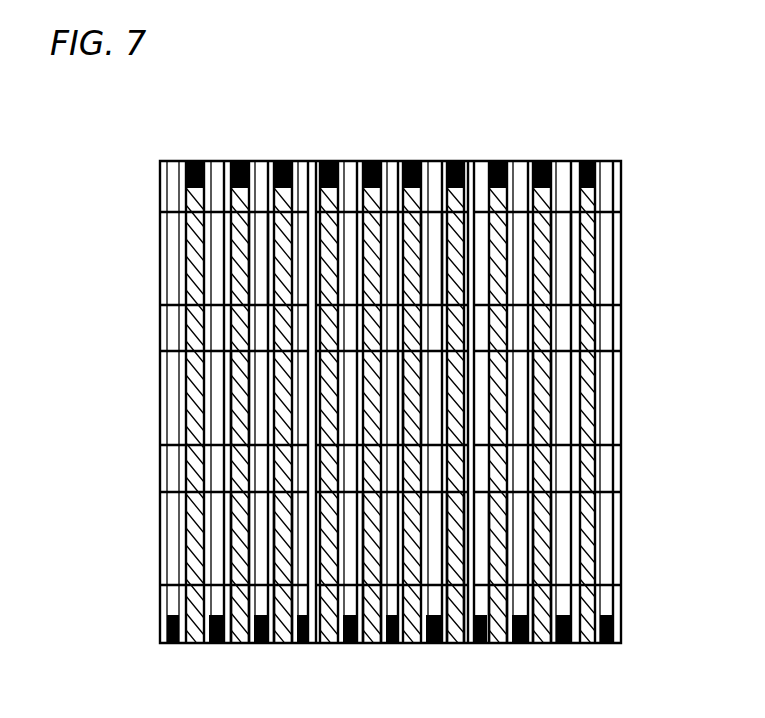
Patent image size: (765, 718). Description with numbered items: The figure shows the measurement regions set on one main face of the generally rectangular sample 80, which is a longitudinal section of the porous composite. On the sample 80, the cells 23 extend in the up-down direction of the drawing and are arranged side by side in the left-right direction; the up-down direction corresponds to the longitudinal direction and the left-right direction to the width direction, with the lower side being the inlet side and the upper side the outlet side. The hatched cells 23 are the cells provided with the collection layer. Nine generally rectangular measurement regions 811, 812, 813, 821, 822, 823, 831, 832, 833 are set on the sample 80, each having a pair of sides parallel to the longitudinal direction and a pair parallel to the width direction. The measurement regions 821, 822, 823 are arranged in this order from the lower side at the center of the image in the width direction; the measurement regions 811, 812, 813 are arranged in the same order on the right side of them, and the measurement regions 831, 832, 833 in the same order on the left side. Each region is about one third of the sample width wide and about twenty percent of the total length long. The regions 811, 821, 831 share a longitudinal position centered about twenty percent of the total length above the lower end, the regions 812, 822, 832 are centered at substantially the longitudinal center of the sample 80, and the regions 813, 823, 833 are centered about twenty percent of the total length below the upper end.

The sample 80 is at (172, 125).
The measurement region 811 is at (493, 559).
The measurement region 812 is at (548, 390).
The measurement region 813 is at (562, 237).
The measurement region 821 is at (365, 559).
The measurement region 822 is at (422, 425).
The measurement region 823 is at (431, 237).
The measurement region 831 is at (235, 559).
The measurement region 832 is at (230, 397).
The measurement region 833 is at (259, 237).
The cell 23 is at (273, 567).